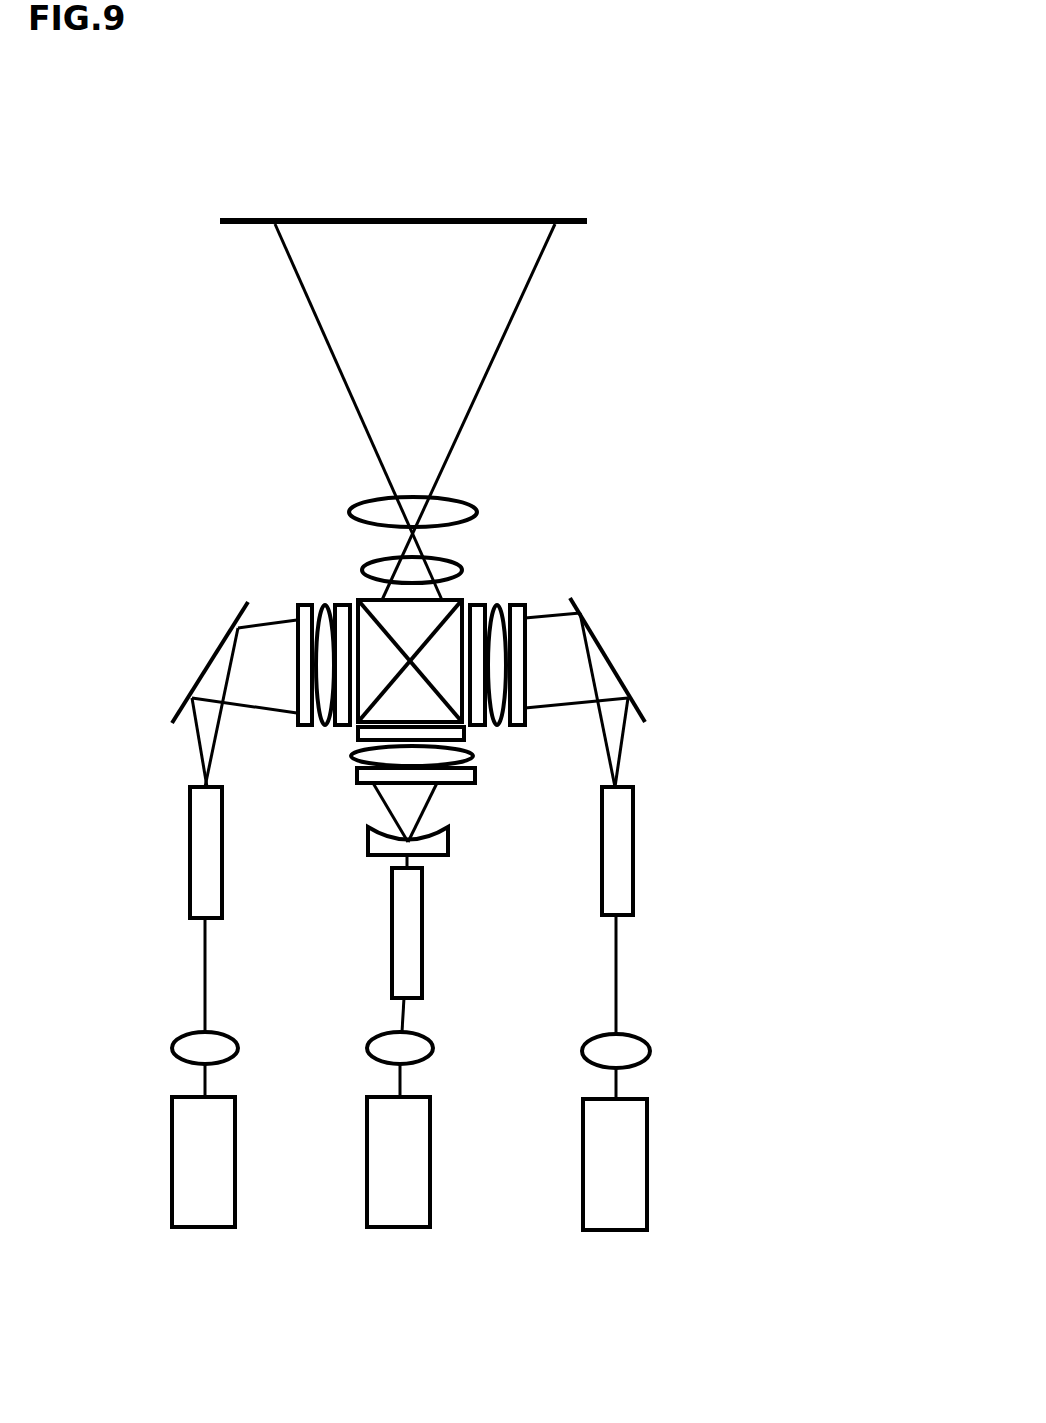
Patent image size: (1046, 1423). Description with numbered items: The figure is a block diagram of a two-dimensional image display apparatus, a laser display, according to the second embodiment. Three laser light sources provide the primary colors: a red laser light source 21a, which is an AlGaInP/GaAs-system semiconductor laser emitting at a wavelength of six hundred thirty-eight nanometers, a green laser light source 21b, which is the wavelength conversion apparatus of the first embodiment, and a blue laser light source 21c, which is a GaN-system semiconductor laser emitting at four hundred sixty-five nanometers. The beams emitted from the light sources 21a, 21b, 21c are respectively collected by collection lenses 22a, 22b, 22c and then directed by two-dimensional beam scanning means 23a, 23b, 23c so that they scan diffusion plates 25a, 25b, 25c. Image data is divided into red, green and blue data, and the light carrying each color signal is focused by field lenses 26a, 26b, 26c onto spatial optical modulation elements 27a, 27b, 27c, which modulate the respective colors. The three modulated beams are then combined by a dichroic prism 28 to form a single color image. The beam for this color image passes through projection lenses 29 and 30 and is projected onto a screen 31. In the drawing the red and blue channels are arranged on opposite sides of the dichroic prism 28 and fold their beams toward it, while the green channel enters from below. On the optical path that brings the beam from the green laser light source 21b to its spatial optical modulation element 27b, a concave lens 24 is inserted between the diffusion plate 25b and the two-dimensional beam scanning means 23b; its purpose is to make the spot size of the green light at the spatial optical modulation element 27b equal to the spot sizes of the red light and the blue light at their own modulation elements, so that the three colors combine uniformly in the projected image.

The red laser light source 21a is at (203, 1203).
The green laser light source 21b is at (398, 1203).
The blue laser light source 21c is at (614, 1205).
The collection lens 22a is at (172, 1045).
The collection lens 22b is at (372, 1044).
The collection lens 22c is at (650, 1052).
The two-dimensional beam scanning means 23a is at (200, 885).
The two-dimensional beam scanning means 23b is at (390, 917).
The two-dimensional beam scanning means 23c is at (622, 855).
The concave lens 24 is at (390, 842).
The diffusion plate 25a is at (293, 602).
The diffusion plate 25b is at (488, 773).
The diffusion plate 25c is at (532, 590).
The field lens 26a is at (320, 593).
The field lens 26b is at (488, 753).
The field lens 26c is at (507, 590).
The spatial optical modulation element 27a is at (338, 593).
The spatial optical modulation element 27b is at (488, 737).
The spatial optical modulation element 27c is at (482, 593).
The dichroic prism 28 is at (427, 635).
The projection lens 29 is at (445, 558).
The projection lens 30 is at (438, 496).
The screen 31 is at (483, 218).